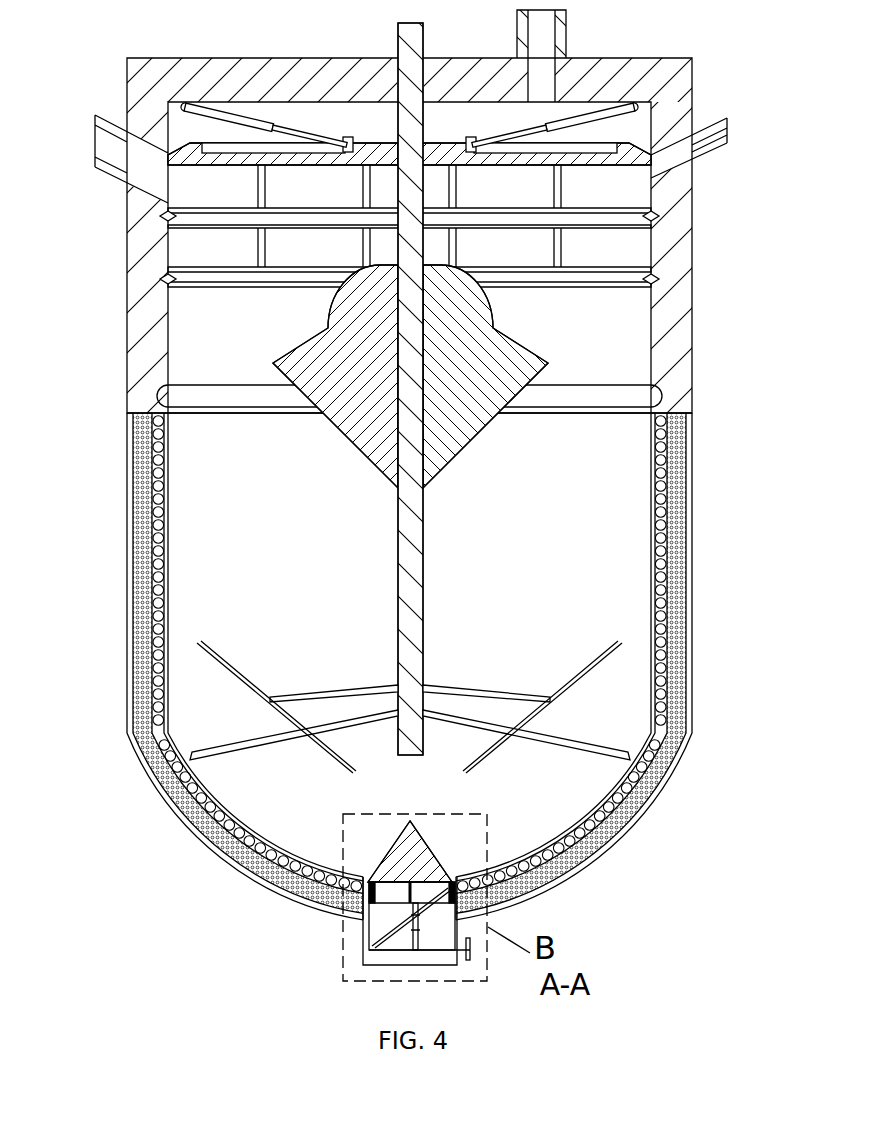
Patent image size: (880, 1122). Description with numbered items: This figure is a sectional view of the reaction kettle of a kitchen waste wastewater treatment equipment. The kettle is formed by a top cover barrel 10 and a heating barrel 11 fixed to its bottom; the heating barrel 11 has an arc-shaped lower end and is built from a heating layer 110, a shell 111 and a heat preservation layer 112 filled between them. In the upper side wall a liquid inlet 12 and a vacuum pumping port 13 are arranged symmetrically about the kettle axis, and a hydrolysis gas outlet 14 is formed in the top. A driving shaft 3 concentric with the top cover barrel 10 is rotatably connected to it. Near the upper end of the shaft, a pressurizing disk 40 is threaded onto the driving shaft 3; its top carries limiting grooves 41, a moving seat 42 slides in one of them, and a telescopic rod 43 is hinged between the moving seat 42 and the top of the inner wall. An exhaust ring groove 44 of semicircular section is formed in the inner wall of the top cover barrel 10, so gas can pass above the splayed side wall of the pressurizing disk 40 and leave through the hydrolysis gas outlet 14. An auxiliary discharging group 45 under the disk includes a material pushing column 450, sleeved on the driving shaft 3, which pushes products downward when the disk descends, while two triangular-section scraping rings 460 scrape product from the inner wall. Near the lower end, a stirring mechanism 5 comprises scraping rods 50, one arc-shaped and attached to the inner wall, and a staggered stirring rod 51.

The top cover barrel 10 is at (143, 362).
The heating barrel 11 is at (692, 532).
The heating layer 110 is at (162, 502).
The shell 111 is at (700, 645).
The heat preservation layer 112 is at (625, 835).
The liquid inlet 12 is at (110, 150).
The vacuum pumping port 13 is at (713, 138).
The hydrolysis gas outlet 14 is at (567, 43).
The driving shaft 3 is at (425, 560).
The pressurizing disk 40 is at (468, 263).
The limiting grooves 41 is at (604, 147).
The moving seat 42 is at (471, 137).
The telescopic rod 43 is at (243, 113).
The exhaust ring groove 44 is at (658, 394).
The auxiliary discharging group 45 is at (457, 257).
The material pushing column 450 is at (467, 453).
The scraping rings 460 is at (652, 278).
The stirring mechanism 5 is at (557, 752).
The scraping rods 50 is at (643, 735).
The stirring rod 51 is at (240, 682).